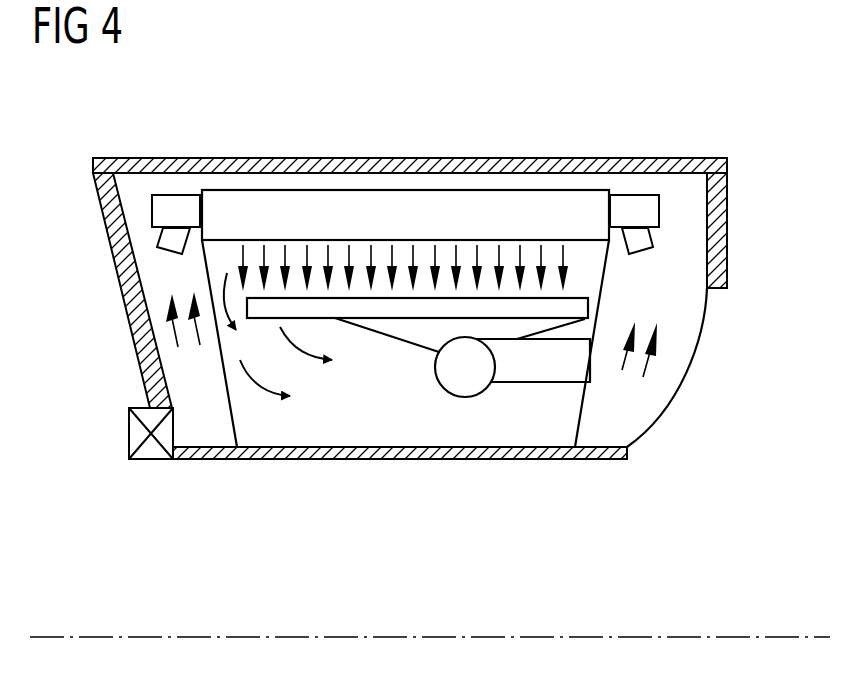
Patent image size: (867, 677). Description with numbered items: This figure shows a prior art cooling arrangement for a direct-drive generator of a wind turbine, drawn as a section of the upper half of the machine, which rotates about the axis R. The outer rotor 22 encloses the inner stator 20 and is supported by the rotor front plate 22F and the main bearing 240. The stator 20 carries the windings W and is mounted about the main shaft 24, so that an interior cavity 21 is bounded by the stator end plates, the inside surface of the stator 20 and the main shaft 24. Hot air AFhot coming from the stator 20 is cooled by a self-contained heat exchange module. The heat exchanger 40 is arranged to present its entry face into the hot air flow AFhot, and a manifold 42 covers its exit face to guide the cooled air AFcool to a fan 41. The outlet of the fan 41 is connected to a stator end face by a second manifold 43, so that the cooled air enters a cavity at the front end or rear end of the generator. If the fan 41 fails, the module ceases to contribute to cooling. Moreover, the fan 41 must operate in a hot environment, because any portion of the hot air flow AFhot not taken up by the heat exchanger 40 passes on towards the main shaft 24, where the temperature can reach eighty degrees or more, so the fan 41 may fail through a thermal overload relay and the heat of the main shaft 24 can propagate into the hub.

The stator 20 is at (520, 200).
The rotor 22 is at (390, 166).
The rotor front plate 22F is at (126, 278).
The main bearing 240 is at (140, 433).
The interior cavity 21 is at (281, 444).
The main shaft 24 is at (369, 452).
The heat exchanger 40 is at (577, 313).
The fan 41 is at (475, 382).
The manifold 42 is at (417, 330).
The second manifold 43 is at (555, 370).
The windings W is at (185, 205).
The hot air flow AFhot is at (348, 405).
The cooled air AFcool is at (650, 358).
The axis R is at (410, 636).